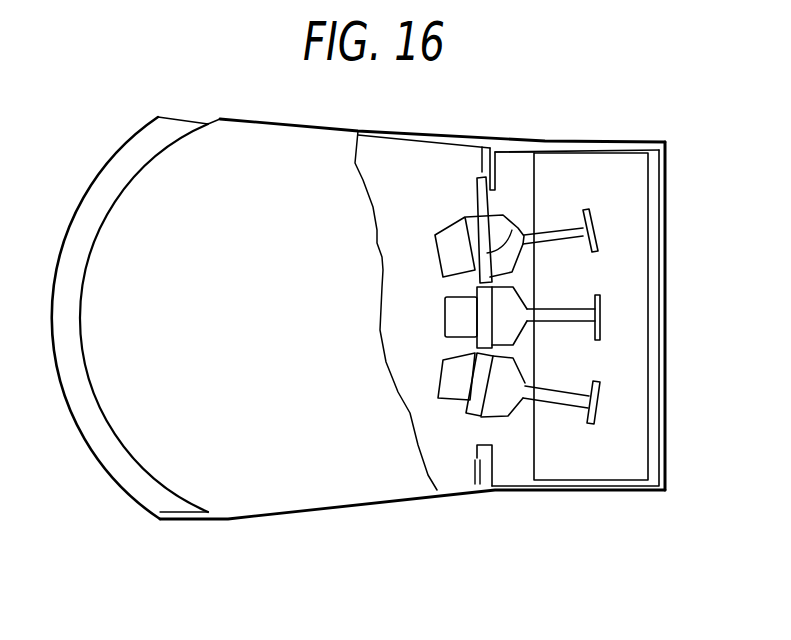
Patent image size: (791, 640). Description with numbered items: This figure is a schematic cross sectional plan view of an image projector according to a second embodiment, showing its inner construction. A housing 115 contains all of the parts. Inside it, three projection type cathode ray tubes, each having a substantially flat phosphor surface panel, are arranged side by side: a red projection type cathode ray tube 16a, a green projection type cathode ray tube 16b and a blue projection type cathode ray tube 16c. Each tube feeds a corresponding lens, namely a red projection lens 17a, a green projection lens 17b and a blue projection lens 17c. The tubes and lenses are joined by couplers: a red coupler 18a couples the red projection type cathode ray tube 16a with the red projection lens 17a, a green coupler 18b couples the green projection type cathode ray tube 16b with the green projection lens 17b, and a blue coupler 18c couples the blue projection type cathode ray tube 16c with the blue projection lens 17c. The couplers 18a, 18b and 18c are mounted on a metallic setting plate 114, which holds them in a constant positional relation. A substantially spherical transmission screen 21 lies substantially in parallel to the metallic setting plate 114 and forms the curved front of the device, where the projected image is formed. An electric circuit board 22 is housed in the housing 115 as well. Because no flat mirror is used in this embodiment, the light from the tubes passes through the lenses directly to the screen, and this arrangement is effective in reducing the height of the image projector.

The substantially spherical transmission screen 21 is at (63, 400).
The electric circuit board 22 is at (648, 217).
The housing 115 is at (343, 112).
The metallic setting plate 114 is at (480, 484).
The red projection type cathode ray tube 16a is at (567, 228).
The green projection type cathode ray tube 16b is at (575, 325).
The blue projection type cathode ray tube 16c is at (585, 405).
The red projection lens 17a is at (455, 232).
The green projection lens 17b is at (445, 317).
The blue projection lens 17c is at (448, 400).
The red coupler 18a is at (487, 253).
The green coupler 18b is at (510, 315).
The blue coupler 18c is at (487, 385).